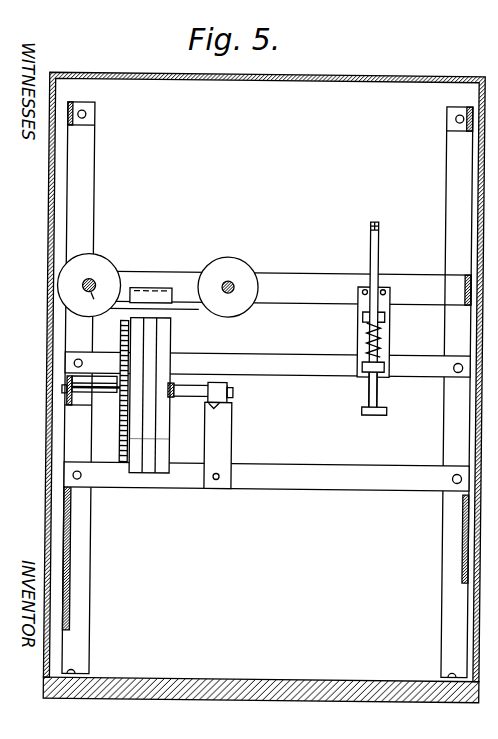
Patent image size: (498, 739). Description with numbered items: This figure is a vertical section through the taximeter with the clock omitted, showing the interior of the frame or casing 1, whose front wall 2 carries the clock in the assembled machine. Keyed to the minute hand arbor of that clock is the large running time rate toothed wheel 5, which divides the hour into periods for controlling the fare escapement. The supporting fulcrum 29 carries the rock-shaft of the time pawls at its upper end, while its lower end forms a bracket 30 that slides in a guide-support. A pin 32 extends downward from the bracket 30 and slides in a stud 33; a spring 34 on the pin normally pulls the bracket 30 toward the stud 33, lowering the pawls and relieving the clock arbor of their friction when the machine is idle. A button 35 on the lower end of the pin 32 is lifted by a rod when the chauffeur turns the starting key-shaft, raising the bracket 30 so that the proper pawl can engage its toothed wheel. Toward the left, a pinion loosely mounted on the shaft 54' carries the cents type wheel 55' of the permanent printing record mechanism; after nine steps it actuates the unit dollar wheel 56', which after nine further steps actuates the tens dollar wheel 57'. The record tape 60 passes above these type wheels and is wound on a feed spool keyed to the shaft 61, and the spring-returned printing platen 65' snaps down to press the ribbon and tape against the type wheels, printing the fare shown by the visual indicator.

The frame or casing 1 is at (50, 247).
The front wall 2 is at (48, 493).
The running time rate toothed wheel 5 is at (127, 440).
The supporting fulcrum 29 is at (377, 266).
The bracket 30 is at (362, 316).
The pin 32 is at (378, 395).
The stud 33 is at (386, 366).
The spring 34 is at (382, 341).
The button 35 is at (380, 415).
The shaft 54' is at (224, 435).
The cents type wheel 55' is at (64, 390).
The unit dollar wheel 56' is at (61, 389).
The tens dollar wheel 57' is at (86, 395).
The record tape 60 is at (193, 312).
The shaft 61 is at (234, 287).
The printing platen 65' is at (156, 268).